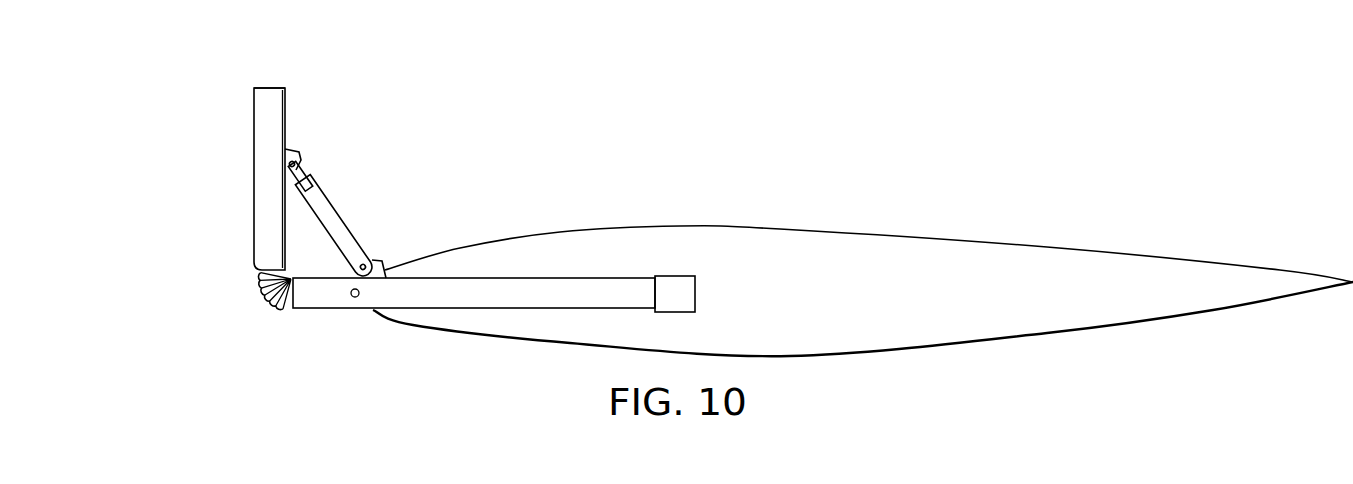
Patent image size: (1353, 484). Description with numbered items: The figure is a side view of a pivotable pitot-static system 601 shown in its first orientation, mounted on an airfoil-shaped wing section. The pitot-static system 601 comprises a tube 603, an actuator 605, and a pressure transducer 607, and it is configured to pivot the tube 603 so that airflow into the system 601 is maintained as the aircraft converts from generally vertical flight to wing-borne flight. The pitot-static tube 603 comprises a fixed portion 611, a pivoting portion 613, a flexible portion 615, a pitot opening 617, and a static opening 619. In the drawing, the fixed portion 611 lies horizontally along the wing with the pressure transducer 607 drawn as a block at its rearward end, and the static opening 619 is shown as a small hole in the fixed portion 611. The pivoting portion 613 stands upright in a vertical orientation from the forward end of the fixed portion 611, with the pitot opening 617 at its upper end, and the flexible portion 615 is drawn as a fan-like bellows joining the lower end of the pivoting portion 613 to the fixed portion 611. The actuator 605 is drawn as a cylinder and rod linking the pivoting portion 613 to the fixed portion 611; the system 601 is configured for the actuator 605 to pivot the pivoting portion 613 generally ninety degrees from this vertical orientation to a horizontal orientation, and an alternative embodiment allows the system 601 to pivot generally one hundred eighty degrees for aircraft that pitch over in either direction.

The pitot-static system 601 is at (200, 81).
The tube 603 is at (246, 147).
The actuator 605 is at (349, 220).
The pressure transducer 607 is at (696, 292).
The fixed portion 611 is at (309, 310).
The pivoting portion 613 is at (286, 92).
The flexible portion 615 is at (259, 292).
The pitot opening 617 is at (268, 87).
The static opening 619 is at (355, 300).